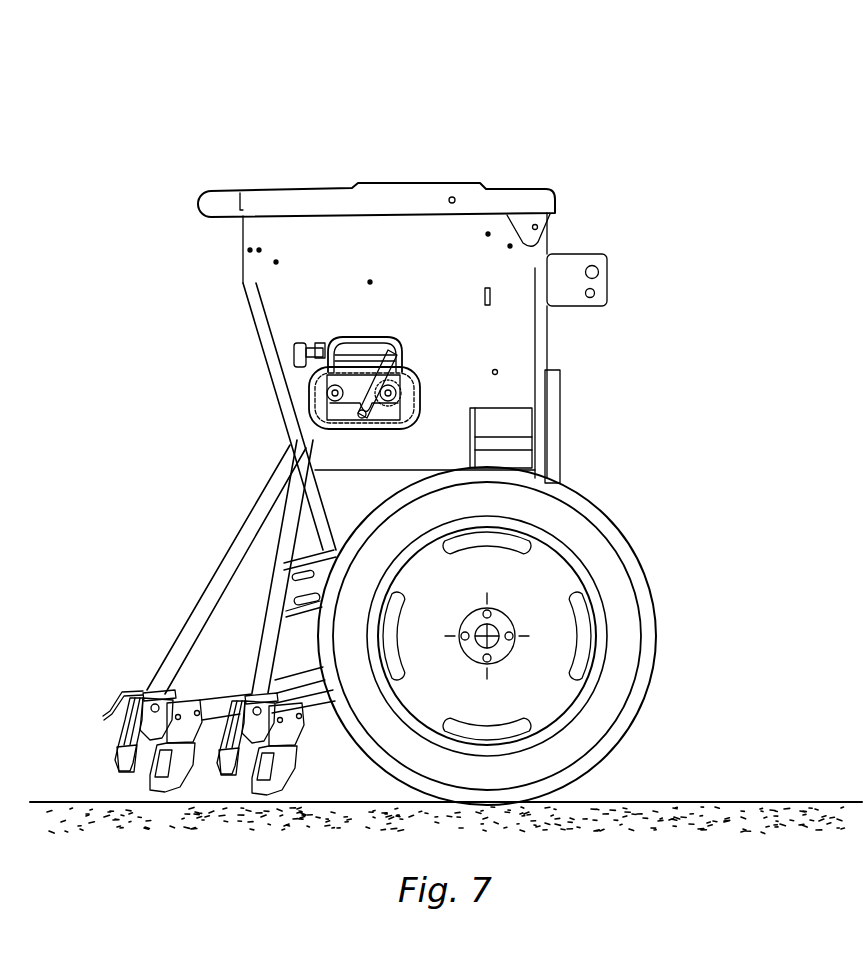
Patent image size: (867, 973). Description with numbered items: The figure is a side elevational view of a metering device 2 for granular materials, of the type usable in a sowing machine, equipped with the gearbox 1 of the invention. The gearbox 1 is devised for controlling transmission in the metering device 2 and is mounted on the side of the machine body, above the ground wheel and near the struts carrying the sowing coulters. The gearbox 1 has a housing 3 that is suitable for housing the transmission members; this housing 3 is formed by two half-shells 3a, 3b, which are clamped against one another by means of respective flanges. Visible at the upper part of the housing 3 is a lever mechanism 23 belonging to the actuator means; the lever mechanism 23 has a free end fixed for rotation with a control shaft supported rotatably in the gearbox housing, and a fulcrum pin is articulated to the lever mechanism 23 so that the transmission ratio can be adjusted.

The gearbox 1 is at (340, 432).
The metering device 2 is at (646, 164).
The housing 3 is at (305, 395).
The half-shell 3a is at (413, 370).
The half-shell 3b is at (379, 384).
The lever mechanism 23 is at (347, 340).